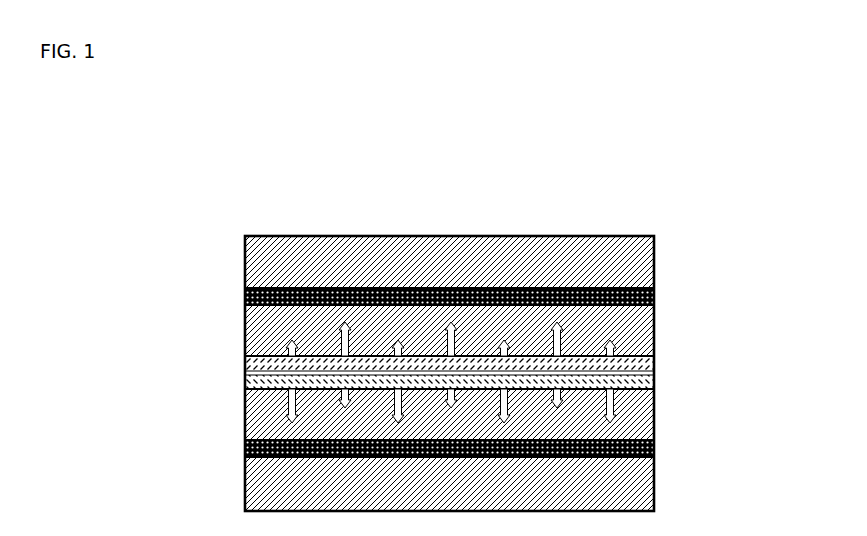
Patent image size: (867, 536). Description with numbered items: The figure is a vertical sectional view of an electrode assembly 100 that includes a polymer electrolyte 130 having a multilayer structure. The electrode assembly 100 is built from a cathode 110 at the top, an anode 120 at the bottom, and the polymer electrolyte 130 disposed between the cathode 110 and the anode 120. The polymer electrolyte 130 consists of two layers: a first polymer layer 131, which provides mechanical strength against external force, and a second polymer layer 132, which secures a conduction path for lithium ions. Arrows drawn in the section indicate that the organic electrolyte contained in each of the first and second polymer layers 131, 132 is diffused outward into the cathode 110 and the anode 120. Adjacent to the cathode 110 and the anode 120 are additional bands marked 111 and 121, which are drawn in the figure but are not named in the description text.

The electrode assembly 100 is at (121, 158).
The cathode 110 is at (226, 255).
The first electrode active material layer / current collector 111 is at (654, 297).
The anode 120 is at (226, 483).
The second electrode active material layer / current collector 121 is at (654, 448).
The polymer electrolyte 130 is at (524, 357).
The first polymer layer 131 is at (654, 357).
The second polymer layer 132 is at (654, 380).